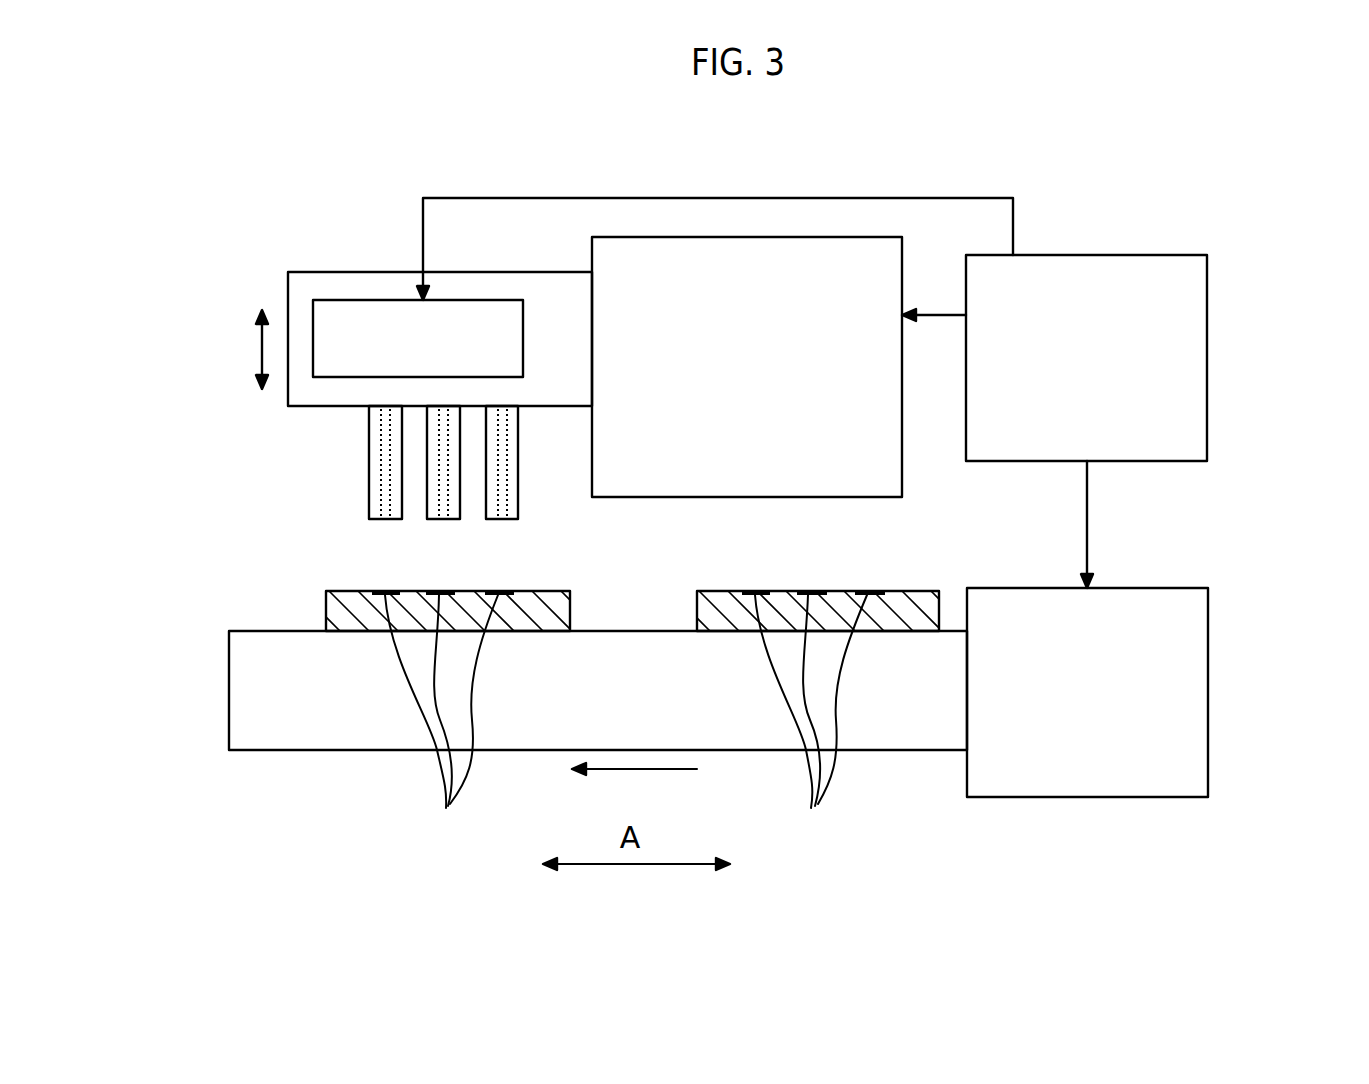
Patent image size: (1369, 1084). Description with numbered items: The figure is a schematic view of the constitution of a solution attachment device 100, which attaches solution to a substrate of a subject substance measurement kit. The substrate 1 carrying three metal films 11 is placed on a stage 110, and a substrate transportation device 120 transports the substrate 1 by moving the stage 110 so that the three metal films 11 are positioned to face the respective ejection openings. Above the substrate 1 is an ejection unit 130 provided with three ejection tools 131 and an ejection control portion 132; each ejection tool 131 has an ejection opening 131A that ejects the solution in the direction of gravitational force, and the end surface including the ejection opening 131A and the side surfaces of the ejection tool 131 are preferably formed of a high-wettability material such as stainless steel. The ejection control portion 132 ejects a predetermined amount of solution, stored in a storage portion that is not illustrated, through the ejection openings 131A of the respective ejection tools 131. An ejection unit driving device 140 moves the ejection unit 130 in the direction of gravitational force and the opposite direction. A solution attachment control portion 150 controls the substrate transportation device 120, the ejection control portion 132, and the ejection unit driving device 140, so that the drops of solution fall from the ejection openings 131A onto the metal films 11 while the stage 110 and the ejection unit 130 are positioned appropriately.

The substrate 1 is at (326, 615).
The metal films 11 is at (626, 722).
The solution attachment device 100 is at (274, 853).
The stage 110 is at (229, 692).
The substrate transportation device 120 is at (1208, 688).
The ejection unit 130 is at (343, 272).
The ejection tools 131 is at (486, 465).
The ejection openings 131A is at (498, 522).
The ejection control portion 132 is at (313, 318).
The ejection unit driving device 140 is at (743, 237).
The solution attachment control portion 150 is at (1208, 350).